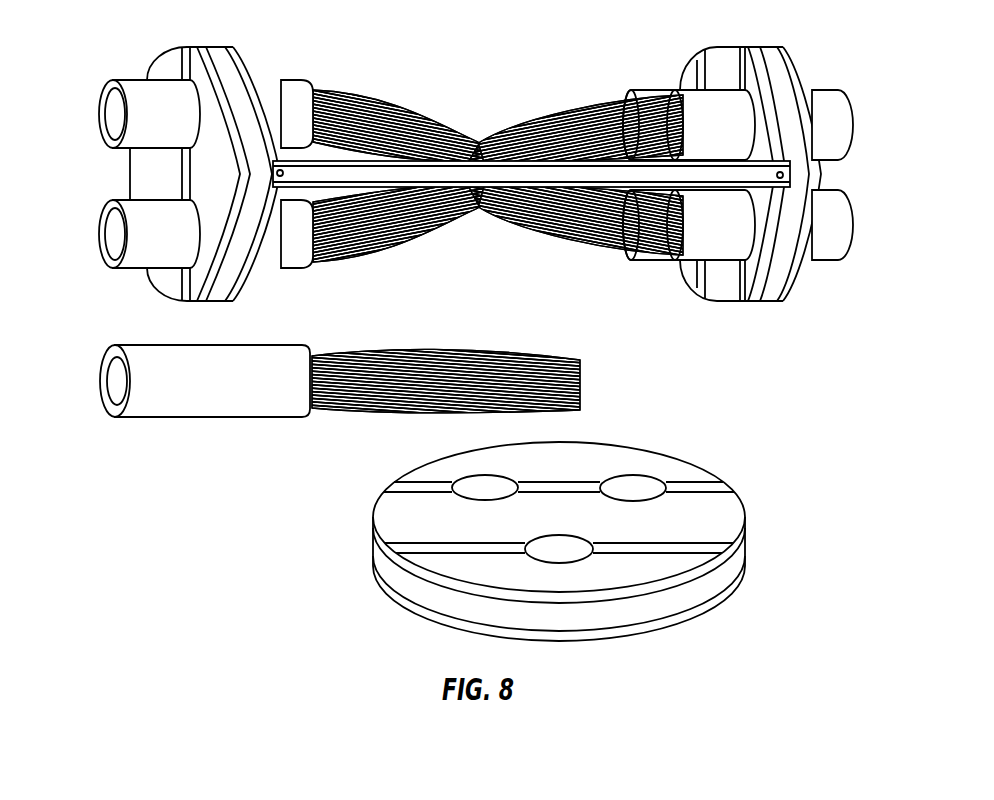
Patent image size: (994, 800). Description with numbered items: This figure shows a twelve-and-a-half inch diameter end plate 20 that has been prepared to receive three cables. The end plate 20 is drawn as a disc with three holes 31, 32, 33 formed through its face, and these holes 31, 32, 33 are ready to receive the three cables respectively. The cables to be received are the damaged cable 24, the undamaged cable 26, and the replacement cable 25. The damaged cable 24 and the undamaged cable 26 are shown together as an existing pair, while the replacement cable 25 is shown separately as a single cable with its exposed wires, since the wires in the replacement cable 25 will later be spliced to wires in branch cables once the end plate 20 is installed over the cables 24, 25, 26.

The end plate 20 is at (591, 509).
The damaged cable 24 is at (138, 257).
The replacement cable 25 is at (148, 398).
The undamaged cable 26 is at (137, 97).
The hole 31 is at (485, 488).
The hole 32 is at (633, 488).
The hole 33 is at (560, 547).